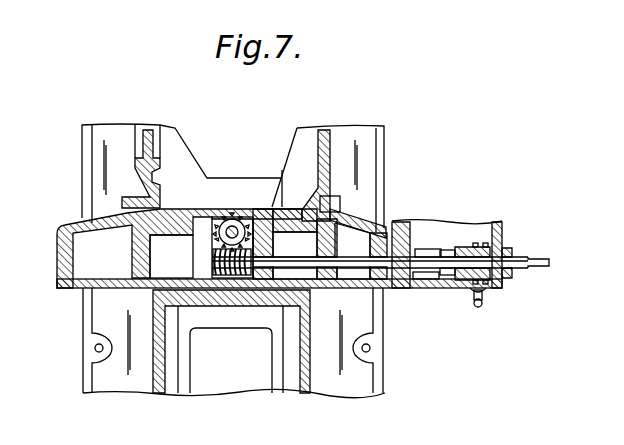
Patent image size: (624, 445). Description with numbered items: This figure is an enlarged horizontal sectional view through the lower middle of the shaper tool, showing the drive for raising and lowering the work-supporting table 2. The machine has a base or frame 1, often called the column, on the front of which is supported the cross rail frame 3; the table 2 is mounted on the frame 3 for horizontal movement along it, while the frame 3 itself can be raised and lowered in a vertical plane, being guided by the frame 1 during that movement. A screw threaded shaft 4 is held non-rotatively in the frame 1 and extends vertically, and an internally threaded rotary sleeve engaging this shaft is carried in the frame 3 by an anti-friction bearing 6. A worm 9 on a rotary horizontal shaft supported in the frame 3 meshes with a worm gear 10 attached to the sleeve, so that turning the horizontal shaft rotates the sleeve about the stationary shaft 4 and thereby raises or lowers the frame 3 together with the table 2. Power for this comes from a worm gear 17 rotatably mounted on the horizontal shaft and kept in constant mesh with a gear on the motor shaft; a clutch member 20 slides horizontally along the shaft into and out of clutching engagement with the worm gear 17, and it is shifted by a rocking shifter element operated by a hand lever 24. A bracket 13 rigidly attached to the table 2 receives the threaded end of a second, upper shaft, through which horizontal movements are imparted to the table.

The base or frame 1 is at (326, 131).
The work-supporting table 2 is at (157, 395).
The frame 3 is at (57, 263).
The screw threaded shaft 4 is at (233, 226).
The anti-friction bearing 6 is at (354, 257).
The worm 9 is at (212, 260).
The worm gear 10 is at (222, 220).
The bracket 13 is at (252, 212).
The worm gear 17 is at (427, 279).
The clutch member 20 is at (463, 247).
The hand lever 24 is at (485, 301).